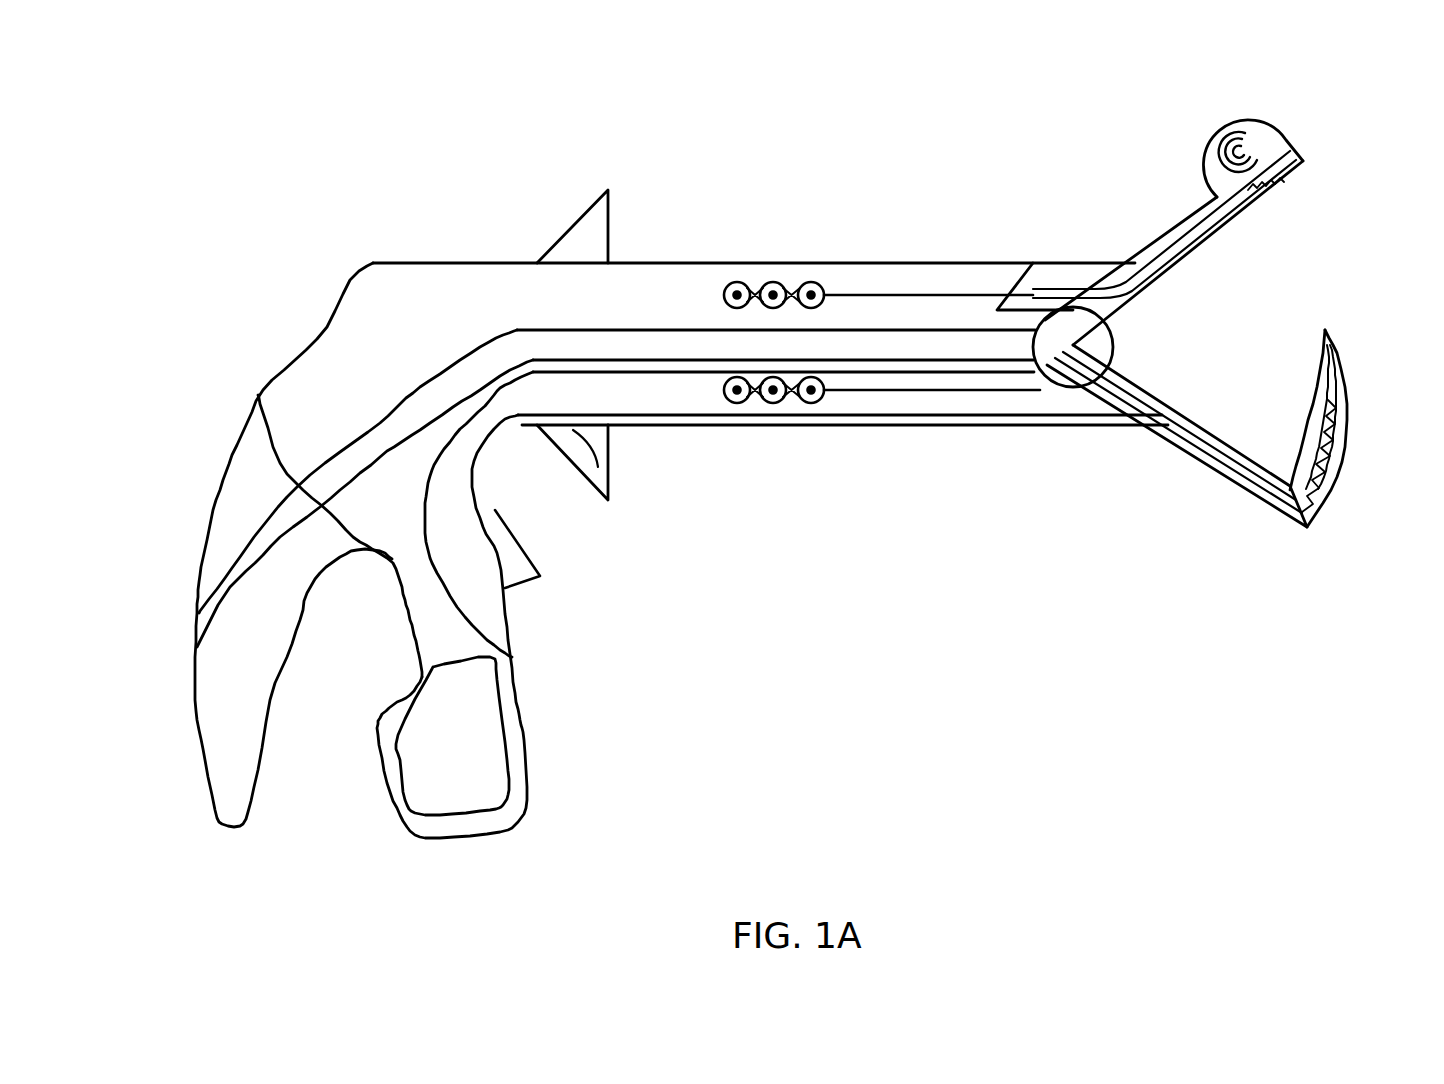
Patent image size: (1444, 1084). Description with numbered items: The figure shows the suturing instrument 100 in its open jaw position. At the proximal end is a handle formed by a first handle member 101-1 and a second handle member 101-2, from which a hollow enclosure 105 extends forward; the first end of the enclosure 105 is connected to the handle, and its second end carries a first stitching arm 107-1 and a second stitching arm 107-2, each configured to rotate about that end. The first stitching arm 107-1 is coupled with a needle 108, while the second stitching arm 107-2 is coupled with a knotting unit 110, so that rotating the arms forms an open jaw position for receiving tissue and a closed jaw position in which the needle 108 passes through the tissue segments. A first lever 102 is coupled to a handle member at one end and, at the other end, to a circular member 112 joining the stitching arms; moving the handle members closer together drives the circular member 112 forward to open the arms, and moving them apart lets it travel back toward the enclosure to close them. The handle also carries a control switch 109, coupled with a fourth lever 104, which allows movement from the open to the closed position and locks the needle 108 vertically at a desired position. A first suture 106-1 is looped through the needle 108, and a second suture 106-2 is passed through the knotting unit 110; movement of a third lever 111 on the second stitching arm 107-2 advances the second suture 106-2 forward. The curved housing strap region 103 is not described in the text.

The suturing instrument 100 is at (229, 118).
The first handle member 101-1 is at (382, 764).
The second handle member 101-2 is at (544, 605).
The first lever 102 is at (232, 545).
The housing strap 103 is at (666, 433).
The fourth lever 104 is at (762, 300).
The enclosure 105 is at (843, 502).
The first suture 106-1 is at (882, 493).
The second suture 106-2 is at (878, 231).
The first stitching arm 107-1 is at (1244, 468).
The second stitching arm 107-2 is at (1229, 199).
The needle 108 is at (1366, 463).
The control switch 109 is at (595, 575).
The knotting unit 110 is at (1323, 125).
The third lever 111 is at (1216, 224).
The circular member 112 is at (1024, 418).